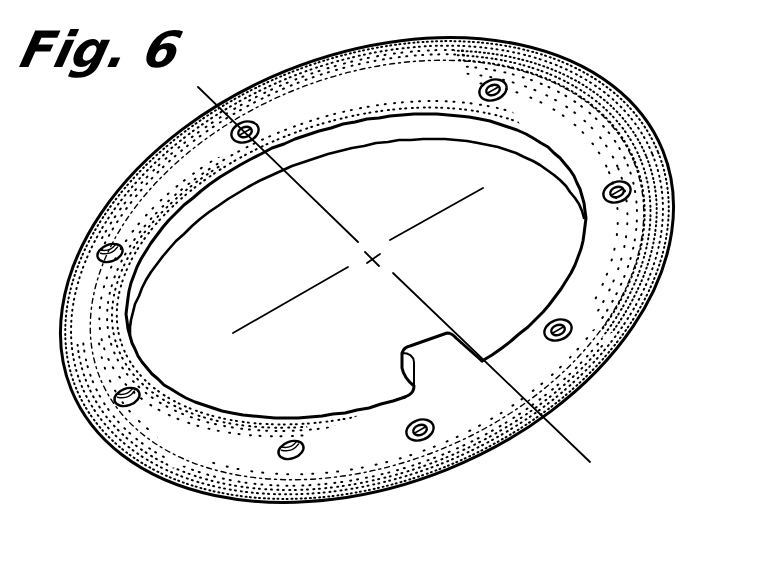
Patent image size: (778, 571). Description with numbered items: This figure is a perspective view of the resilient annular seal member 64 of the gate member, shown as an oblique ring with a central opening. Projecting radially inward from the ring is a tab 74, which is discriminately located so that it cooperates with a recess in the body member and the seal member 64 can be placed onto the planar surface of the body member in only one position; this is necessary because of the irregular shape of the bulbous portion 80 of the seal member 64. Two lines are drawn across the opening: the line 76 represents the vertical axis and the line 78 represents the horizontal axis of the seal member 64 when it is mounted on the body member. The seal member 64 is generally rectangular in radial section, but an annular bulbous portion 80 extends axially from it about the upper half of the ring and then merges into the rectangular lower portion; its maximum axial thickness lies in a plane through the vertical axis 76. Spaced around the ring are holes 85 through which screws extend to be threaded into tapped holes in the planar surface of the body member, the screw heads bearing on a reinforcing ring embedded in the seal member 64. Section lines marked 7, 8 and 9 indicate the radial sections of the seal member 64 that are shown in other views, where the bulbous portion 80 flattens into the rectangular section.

The annular resilient seal member 64 is at (658, 275).
The radially inwardly projecting tab 74 is at (452, 334).
The vertical axis 76 is at (452, 207).
The horizontal axis 78 is at (310, 193).
The bulbous portion 80 is at (557, 77).
The holes 85 is at (293, 458).
The section line 7- 7 is at (582, 133).
The section line 8- 8 is at (385, 367).
The section line 9- 9 is at (193, 390).